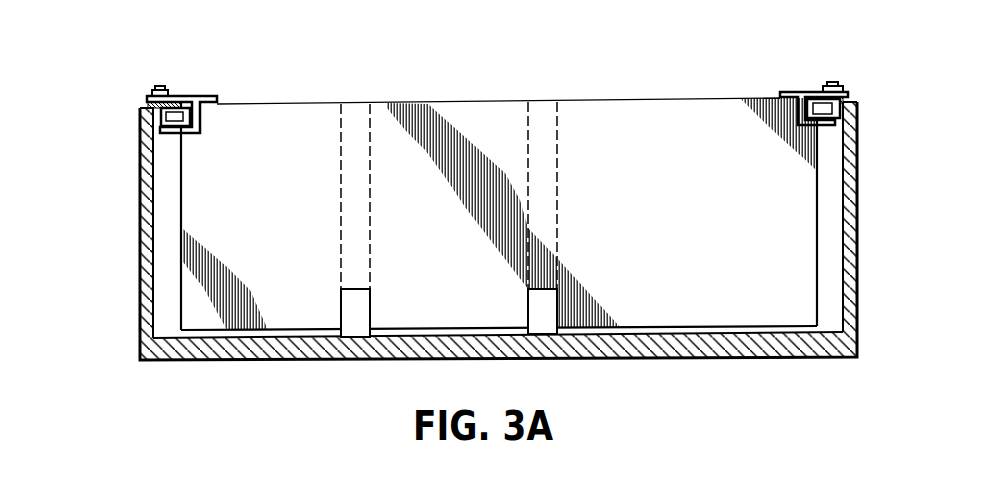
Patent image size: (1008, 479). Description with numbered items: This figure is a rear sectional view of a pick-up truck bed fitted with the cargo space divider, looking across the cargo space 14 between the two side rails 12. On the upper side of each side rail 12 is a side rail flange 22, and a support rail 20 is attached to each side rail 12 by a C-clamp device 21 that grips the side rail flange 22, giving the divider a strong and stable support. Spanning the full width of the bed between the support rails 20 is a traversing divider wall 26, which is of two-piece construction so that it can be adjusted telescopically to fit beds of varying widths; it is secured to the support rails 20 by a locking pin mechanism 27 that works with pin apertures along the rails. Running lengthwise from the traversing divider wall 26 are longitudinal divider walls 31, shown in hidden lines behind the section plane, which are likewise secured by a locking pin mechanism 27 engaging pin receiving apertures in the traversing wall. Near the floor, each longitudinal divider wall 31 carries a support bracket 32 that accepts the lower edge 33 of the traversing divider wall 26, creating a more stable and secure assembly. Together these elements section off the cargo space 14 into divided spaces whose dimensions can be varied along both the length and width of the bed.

The side rail 12 is at (142, 197).
The cargo space 14 is at (258, 347).
The support rail 20 is at (145, 105).
The C-clamp device 21 is at (178, 98).
The side rail flange 22 is at (152, 118).
The traversing divider wall 26 is at (440, 112).
The locking pin mechanism 27 is at (368, 102).
The longitudinal divider wall 31 is at (372, 242).
The support bracket 32 is at (353, 317).
The lower edge 33 is at (411, 338).